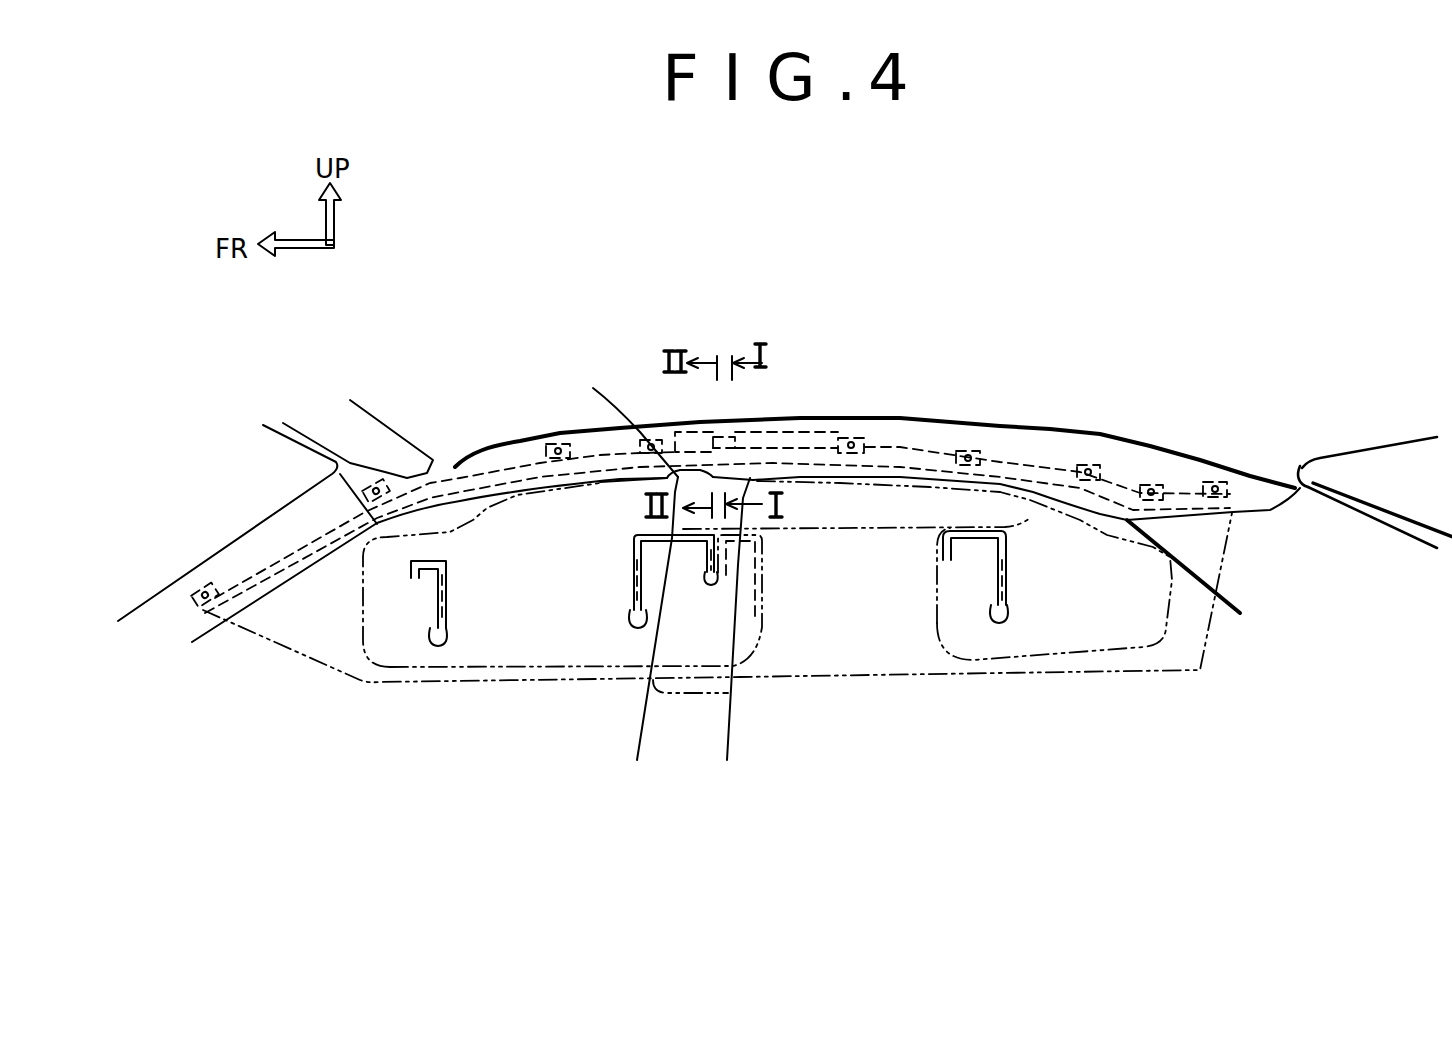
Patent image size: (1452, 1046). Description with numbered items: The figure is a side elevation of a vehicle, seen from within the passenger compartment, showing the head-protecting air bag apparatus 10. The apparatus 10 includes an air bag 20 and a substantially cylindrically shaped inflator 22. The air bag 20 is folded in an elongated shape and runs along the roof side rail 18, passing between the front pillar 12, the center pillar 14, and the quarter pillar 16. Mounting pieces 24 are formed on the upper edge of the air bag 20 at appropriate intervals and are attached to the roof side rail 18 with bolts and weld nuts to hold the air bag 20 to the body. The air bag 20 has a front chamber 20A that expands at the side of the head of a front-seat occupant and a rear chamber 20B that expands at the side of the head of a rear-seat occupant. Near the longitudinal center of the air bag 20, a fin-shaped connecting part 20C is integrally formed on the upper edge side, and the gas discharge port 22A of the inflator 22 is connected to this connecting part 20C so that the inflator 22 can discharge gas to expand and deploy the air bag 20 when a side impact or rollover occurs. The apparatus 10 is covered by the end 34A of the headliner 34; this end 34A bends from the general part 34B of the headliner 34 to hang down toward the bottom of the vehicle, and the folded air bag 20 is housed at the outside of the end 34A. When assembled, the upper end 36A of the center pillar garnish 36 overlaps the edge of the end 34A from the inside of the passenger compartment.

The head-protecting air bag apparatus 10 is at (808, 390).
The front pillar 12 is at (267, 533).
The center pillar 14 is at (720, 618).
The quarter pillar 16 is at (1285, 560).
The roof side rail 18 is at (890, 440).
The air bag 20 is at (717, 567).
The front chamber 20A is at (537, 647).
The rear chamber 20B is at (1067, 633).
The connecting part 20C is at (683, 427).
The inflator 22 is at (845, 425).
The gas discharge port 22A is at (740, 427).
The mounting pieces 24 is at (205, 585).
The headliner 34 is at (540, 422).
The end of the headliner 34A is at (590, 447).
The general part of the headliner 34B is at (923, 397).
The center pillar garnish 36 is at (743, 615).
The upper end of the center pillar garnish 36A is at (619, 413).